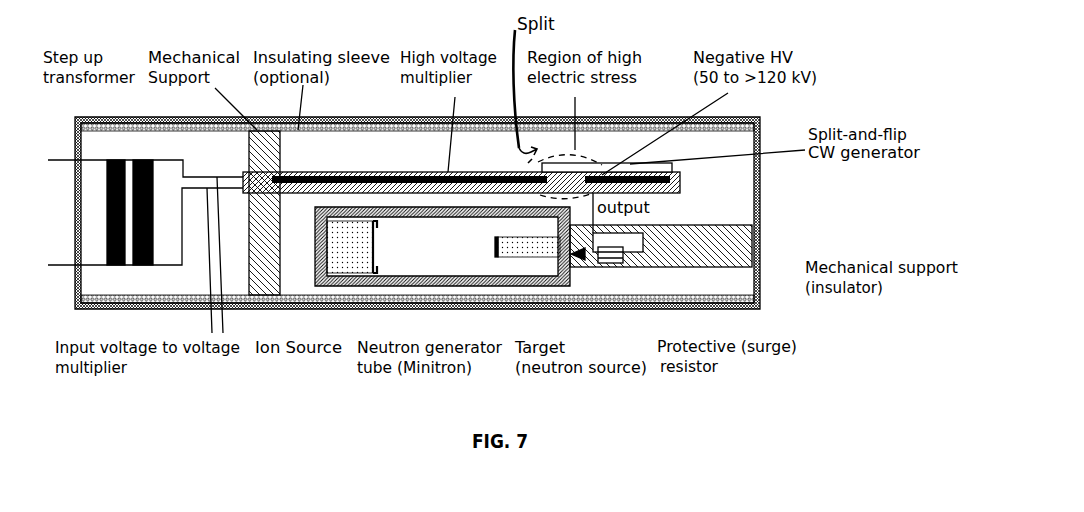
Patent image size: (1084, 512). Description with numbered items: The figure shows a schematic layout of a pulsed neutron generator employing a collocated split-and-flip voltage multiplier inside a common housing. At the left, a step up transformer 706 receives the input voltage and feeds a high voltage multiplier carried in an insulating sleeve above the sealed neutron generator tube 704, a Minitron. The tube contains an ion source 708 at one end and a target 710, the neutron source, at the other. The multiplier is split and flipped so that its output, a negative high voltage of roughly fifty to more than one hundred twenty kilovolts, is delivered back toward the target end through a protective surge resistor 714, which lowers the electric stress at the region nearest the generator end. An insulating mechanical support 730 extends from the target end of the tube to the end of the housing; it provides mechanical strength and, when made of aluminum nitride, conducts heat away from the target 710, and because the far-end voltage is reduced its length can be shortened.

The neutron generator tube 704 is at (422, 270).
The step up transformer 706 is at (108, 160).
The ion source 708 is at (353, 257).
The target 710 is at (500, 257).
The protective surge resistor 714 is at (623, 263).
The insulating mechanical support 730 is at (733, 262).